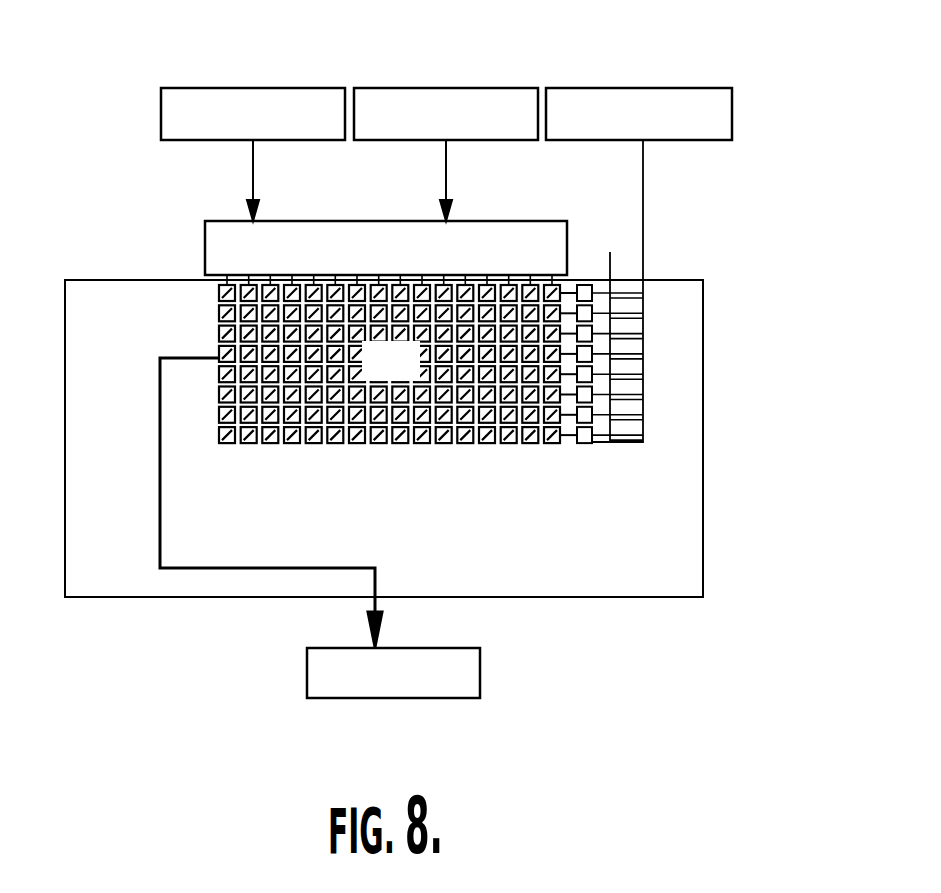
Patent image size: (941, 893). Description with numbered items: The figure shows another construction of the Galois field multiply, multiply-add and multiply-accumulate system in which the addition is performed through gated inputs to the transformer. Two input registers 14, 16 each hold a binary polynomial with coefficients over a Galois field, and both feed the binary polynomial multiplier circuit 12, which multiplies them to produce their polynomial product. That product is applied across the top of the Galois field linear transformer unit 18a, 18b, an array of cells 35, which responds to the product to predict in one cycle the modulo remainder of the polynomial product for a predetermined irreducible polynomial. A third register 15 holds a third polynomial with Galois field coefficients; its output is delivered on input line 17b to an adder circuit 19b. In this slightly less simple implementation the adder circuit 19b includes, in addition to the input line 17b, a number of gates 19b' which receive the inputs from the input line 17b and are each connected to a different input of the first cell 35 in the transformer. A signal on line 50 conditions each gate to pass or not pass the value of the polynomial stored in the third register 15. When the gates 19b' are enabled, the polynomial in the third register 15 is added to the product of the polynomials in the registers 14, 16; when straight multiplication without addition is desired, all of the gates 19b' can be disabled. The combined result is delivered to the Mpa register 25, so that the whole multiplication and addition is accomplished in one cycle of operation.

The binary polynomial multiplier circuit 12 is at (477, 221).
The register 14 is at (253, 88).
The third register 15 is at (616, 88).
The register 16 is at (428, 88).
The input line 17b is at (643, 232).
The Galois field linear transformer unit 18a is at (272, 458).
The Galois field linear transformer unit 18b is at (703, 556).
The adder circuit 19b is at (751, 337).
The gates 19b' is at (610, 433).
The Mpa register 25 is at (480, 667).
The cells 35 is at (423, 446).
The line 50 is at (609, 252).